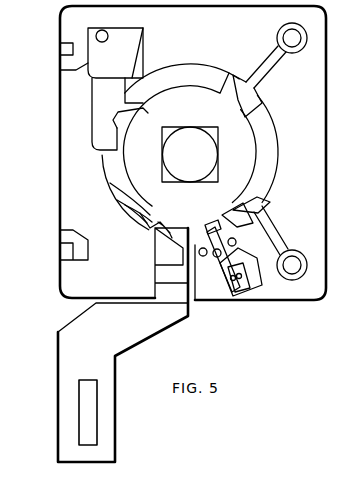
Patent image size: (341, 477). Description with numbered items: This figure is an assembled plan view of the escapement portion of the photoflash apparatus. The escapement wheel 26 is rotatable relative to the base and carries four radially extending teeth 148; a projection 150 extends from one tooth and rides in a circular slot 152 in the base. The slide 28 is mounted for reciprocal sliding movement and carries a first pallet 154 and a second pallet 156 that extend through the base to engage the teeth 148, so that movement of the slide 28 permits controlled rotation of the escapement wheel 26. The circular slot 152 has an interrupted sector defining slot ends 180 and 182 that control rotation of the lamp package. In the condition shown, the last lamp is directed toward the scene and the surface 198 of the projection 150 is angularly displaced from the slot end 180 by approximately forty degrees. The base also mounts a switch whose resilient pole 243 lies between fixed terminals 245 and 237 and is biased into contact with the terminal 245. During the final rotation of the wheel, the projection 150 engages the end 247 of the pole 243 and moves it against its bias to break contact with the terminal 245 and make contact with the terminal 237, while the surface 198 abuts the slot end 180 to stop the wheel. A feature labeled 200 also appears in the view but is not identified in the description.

The escapement wheel 26 is at (249, 115).
The slide 28 is at (67, 345).
The teeth 148 is at (236, 75).
The projection 150 is at (120, 208).
The circular slot 152 is at (268, 167).
The first pallet 154 is at (170, 248).
The second pallet 156 is at (130, 44).
The slot end 180 is at (218, 220).
The slot end 182 is at (256, 208).
The surface 198 is at (157, 241).
The pawl spring arm 200 is at (117, 190).
The fixed terminal 237 is at (256, 233).
The resilient pole 243 is at (258, 272).
The fixed terminal 245 is at (204, 290).
The end 247 is at (212, 228).